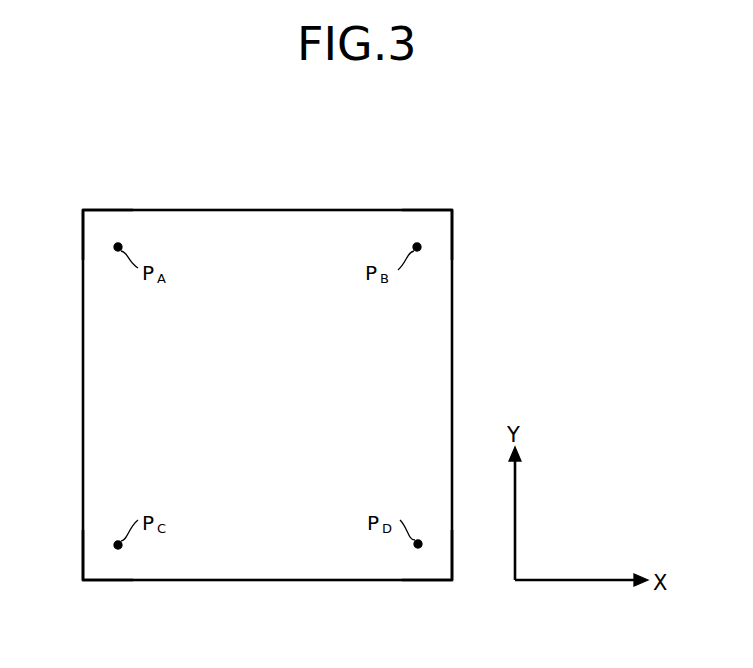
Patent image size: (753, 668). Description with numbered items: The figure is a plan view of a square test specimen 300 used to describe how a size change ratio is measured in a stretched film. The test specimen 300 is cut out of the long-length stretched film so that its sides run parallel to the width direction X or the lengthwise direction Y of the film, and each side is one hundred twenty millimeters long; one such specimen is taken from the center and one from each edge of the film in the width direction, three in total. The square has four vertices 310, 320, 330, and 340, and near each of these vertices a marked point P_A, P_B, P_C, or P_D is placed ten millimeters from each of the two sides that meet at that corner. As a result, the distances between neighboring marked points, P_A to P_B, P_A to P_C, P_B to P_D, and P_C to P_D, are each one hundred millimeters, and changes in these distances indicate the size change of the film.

The test specimen 300 is at (268, 218).
The vertex 310 is at (83, 210).
The vertex 320 is at (452, 210).
The vertex 330 is at (83, 580).
The vertex 340 is at (452, 580).